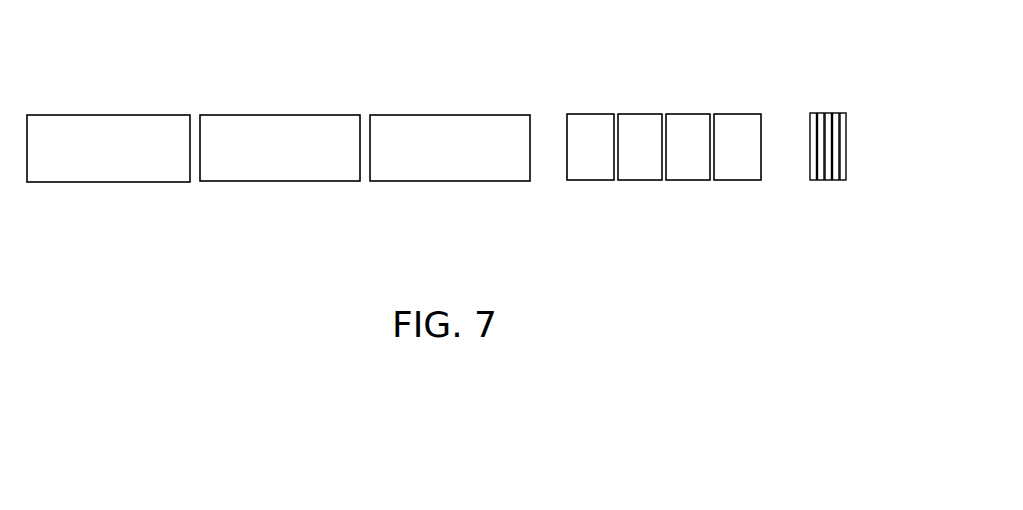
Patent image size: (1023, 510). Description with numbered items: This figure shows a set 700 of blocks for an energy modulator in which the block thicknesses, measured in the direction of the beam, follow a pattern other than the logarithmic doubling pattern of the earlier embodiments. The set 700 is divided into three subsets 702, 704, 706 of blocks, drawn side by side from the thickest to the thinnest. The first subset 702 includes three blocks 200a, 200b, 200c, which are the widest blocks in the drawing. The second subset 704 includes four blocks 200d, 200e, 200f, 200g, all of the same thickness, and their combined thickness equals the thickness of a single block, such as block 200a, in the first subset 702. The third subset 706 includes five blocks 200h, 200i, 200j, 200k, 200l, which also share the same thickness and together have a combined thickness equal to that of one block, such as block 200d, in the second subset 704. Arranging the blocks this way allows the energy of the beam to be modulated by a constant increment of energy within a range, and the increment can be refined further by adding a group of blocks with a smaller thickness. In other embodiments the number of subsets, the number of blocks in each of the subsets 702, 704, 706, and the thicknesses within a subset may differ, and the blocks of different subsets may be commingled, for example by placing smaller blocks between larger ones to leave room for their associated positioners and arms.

The set 700 is at (857, 47).
The first subset 702 is at (28, 108).
The second subset 704 is at (761, 108).
The third subset 706 is at (810, 110).
The block 200a is at (108, 148).
The block 200b is at (280, 148).
The block 200c is at (450, 148).
The block 200d is at (592, 181).
The block 200e is at (642, 181).
The block 200f is at (688, 181).
The block 200g is at (738, 181).
The block 200h is at (813, 181).
The block 200i is at (820, 181).
The block 200j is at (828, 181).
The block 200k is at (833, 181).
The block 200l is at (846, 170).